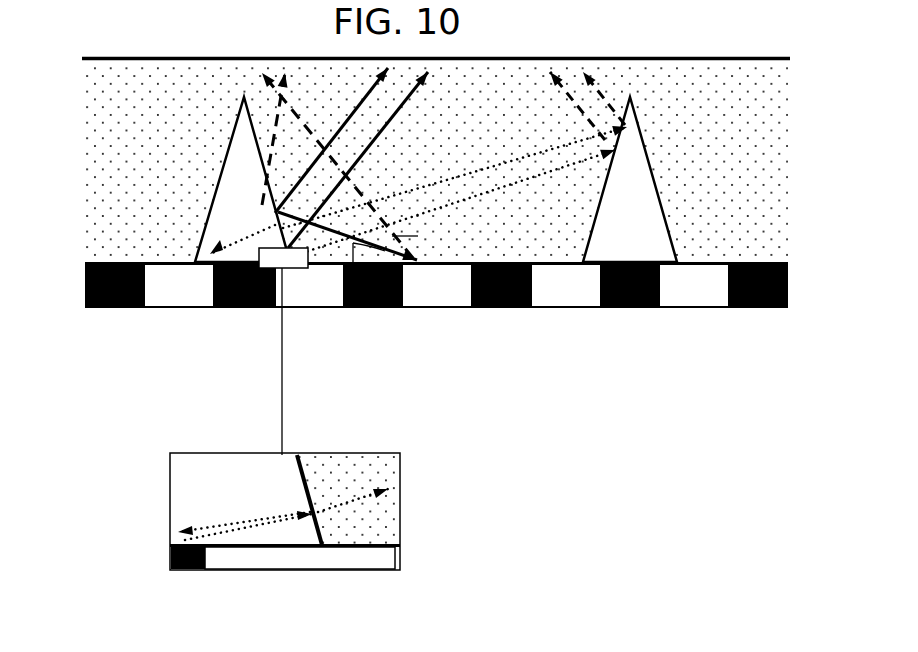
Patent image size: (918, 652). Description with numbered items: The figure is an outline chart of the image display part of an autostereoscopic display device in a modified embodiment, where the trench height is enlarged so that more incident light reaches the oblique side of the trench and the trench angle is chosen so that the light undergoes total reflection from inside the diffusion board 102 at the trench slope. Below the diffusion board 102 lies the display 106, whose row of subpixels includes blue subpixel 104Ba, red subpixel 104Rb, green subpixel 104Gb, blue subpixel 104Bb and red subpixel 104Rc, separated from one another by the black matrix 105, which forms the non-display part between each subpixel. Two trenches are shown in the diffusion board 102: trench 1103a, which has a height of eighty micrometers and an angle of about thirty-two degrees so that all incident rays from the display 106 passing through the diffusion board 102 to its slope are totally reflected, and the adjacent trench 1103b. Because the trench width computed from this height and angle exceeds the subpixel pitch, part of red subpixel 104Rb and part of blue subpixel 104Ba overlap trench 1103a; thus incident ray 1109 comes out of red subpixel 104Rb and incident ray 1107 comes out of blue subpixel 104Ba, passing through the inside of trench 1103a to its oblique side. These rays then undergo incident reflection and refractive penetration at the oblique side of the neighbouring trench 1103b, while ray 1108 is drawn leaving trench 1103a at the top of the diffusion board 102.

The diffusion board 102 is at (78, 62).
The display 106 is at (78, 262).
The black matrix 105 is at (117, 308).
The blue subpixel 104Ba is at (182, 308).
The red subpixel 104Rb is at (312, 308).
The green subpixel 104Gb is at (443, 308).
The blue subpixel 104Bb is at (565, 308).
The red subpixel 104Rc is at (693, 308).
The trench 1103a is at (242, 163).
The trench 1103b is at (640, 167).
The incident ray 1107 is at (240, 240).
The refracted light ray 1108 is at (333, 257).
The incident ray 1109 is at (603, 138).